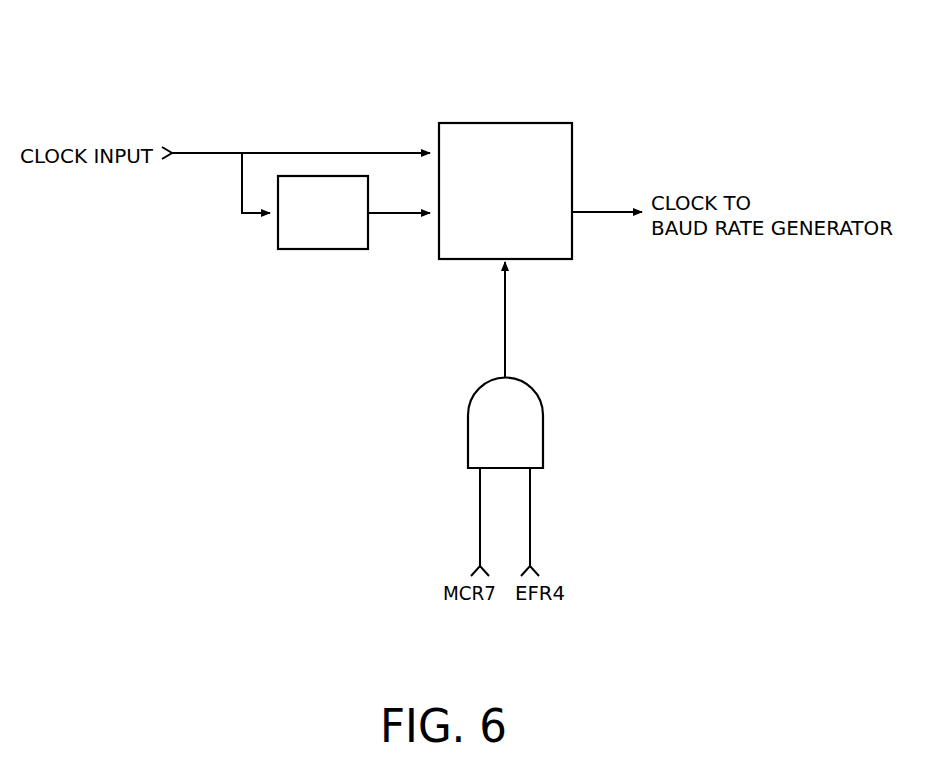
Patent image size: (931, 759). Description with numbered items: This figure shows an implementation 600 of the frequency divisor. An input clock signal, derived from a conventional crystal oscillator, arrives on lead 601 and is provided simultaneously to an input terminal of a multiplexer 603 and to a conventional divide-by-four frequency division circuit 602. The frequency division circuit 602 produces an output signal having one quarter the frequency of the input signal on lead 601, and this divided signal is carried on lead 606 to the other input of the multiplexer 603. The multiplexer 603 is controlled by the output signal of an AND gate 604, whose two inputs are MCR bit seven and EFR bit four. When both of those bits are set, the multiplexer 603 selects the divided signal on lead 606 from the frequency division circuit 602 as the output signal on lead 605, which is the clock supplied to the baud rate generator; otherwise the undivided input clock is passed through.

The implementation of the frequency divisor 600 is at (588, 74).
The lead 601 is at (313, 150).
The divide-by-4 frequency division circuit 602 is at (327, 250).
The multiplexer 603 is at (572, 155).
The AND gate 604 is at (543, 405).
The lead 605 is at (596, 214).
The lead 606 is at (410, 214).